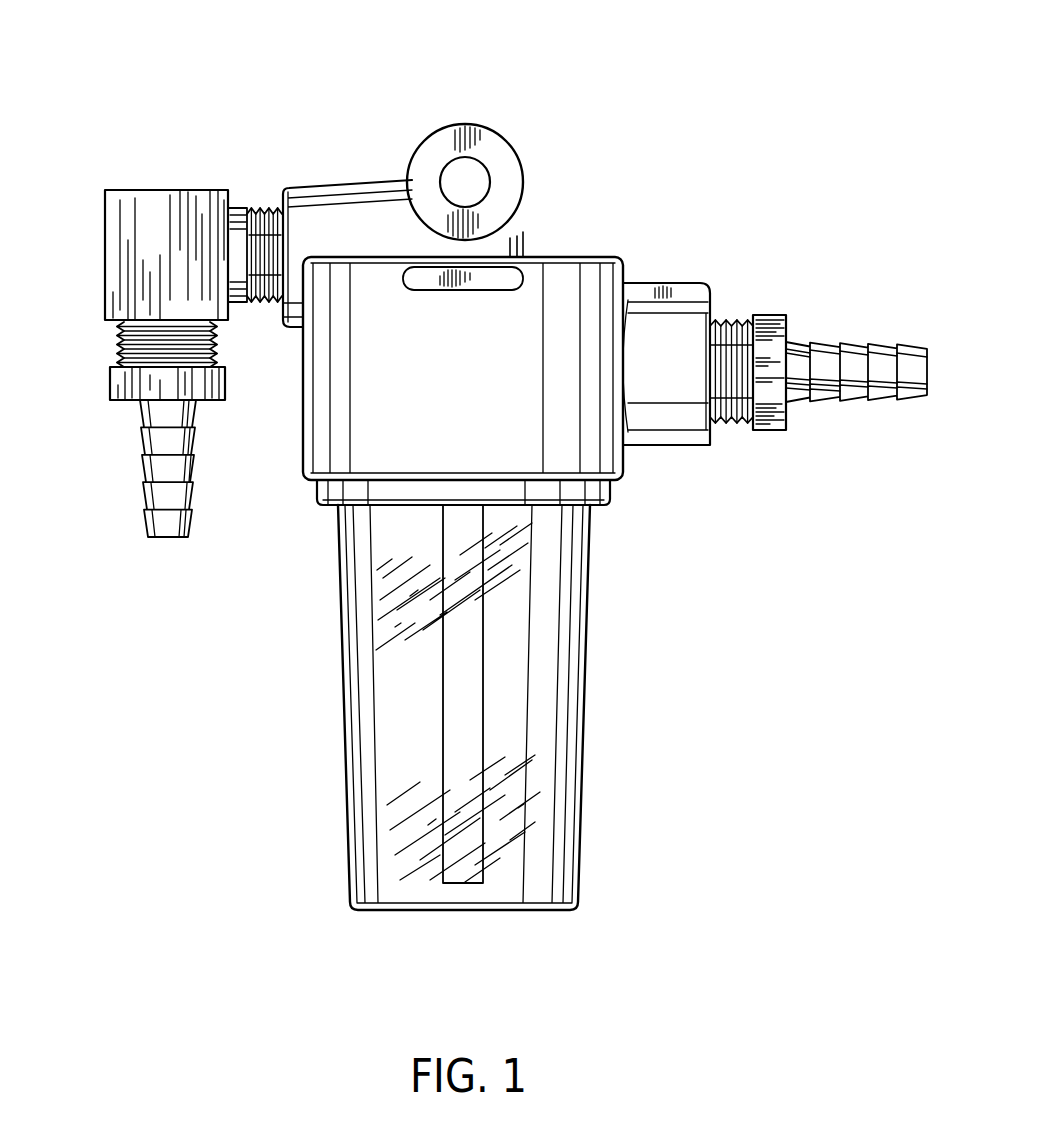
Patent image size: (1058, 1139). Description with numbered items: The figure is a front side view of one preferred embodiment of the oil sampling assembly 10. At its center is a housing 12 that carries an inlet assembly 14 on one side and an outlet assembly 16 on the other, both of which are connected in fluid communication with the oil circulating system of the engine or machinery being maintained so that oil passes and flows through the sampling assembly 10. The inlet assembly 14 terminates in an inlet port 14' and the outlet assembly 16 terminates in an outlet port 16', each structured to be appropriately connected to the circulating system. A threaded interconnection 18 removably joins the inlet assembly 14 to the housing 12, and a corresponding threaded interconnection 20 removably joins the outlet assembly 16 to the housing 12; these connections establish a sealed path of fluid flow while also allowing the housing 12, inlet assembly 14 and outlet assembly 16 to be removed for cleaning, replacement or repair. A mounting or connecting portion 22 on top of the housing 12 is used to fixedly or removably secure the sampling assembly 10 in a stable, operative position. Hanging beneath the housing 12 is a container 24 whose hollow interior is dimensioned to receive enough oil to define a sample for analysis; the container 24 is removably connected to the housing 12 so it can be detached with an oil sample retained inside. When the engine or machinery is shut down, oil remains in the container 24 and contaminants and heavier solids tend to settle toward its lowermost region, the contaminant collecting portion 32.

The oil sampling assembly 10 is at (707, 82).
The housing 12 is at (577, 228).
The inlet assembly 14 is at (150, 230).
The inlet port 14' is at (118, 473).
The outlet assembly 16 is at (820, 312).
The outlet port 16' is at (867, 321).
The threaded interconnection 18 is at (255, 188).
The threaded interconnection 20 is at (733, 287).
The mounting or connecting portion 22 is at (492, 107).
The container 24 is at (633, 640).
The contaminant collecting portion 32 is at (502, 892).